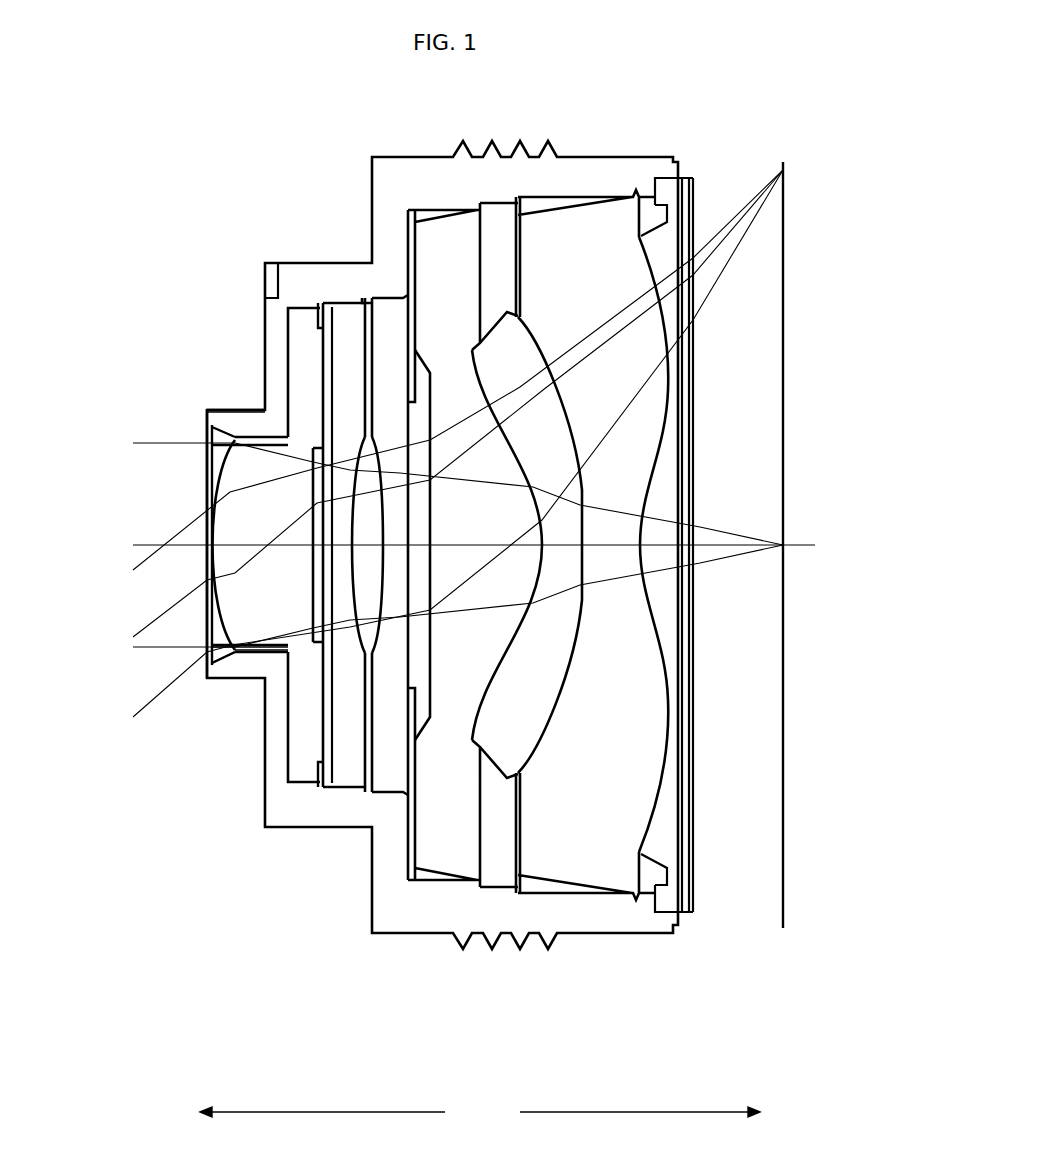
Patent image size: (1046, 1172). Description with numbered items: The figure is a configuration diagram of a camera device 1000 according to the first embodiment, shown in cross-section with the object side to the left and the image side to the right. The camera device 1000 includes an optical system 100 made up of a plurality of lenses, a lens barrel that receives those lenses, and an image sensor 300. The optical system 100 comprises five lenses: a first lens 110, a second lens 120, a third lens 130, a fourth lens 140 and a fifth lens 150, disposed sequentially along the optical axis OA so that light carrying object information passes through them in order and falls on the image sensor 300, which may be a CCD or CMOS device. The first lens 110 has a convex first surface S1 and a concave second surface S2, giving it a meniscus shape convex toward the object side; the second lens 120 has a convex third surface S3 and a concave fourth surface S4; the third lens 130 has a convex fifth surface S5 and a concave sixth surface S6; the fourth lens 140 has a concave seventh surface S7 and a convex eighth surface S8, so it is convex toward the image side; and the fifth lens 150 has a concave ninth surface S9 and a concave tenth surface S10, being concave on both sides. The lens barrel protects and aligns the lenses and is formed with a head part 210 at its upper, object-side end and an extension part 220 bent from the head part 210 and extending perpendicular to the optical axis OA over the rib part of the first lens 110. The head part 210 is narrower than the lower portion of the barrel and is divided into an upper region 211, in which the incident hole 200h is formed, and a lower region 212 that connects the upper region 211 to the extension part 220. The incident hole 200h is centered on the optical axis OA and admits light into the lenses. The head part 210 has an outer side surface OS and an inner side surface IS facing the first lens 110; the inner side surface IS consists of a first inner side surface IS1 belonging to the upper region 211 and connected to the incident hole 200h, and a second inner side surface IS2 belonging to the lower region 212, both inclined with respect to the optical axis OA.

The camera device 1000 is at (175, 103).
The optical system 100 is at (610, 1005).
The first lens 110 is at (244, 684).
The second lens 120 is at (288, 613).
The third lens 130 is at (369, 560).
The fourth lens 140 is at (620, 555).
The fifth lens 150 is at (677, 600).
The head part 210 is at (108, 386).
The upper region 211 is at (211, 427).
The lower region 212 is at (258, 435).
The extension part 220 is at (273, 760).
The incident hole 200h is at (209, 645).
The image sensor 300 is at (784, 848).
The optical axis OA is at (457, 547).
The outer side surface OS is at (225, 410).
The inner side surface IS is at (90, 588).
The first inner side surface IS1 is at (206, 636).
The second inner side surface IS2 is at (272, 647).
The first surface S1 is at (221, 470).
The second surface S2 is at (313, 503).
The third surface S3 is at (327, 498).
The fourth surface S4 is at (360, 455).
The fifth surface S5 is at (377, 445).
The sixth surface S6 is at (385, 465).
The seventh surface S7 is at (466, 392).
The eighth surface S8 is at (540, 515).
The ninth surface S9 is at (577, 445).
The tenth surface S10 is at (670, 398).